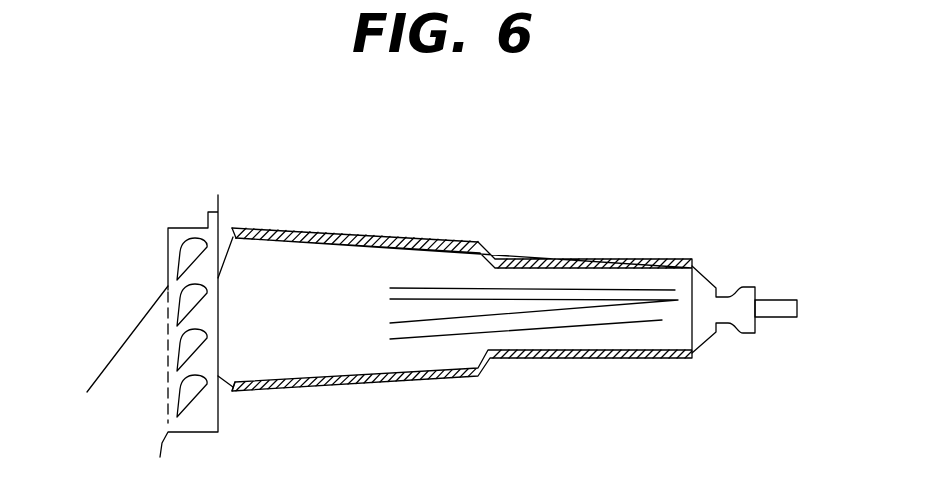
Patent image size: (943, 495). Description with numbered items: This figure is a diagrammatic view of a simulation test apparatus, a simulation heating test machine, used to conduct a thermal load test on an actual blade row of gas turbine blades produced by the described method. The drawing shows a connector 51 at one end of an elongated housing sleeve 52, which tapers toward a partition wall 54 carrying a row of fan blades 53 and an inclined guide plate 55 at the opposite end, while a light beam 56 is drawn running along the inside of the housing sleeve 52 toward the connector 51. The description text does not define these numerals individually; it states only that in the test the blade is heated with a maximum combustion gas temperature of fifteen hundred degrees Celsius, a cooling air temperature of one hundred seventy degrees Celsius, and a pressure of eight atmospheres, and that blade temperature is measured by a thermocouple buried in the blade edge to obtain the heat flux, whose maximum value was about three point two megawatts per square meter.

The connector 51 is at (741, 288).
The housing sleeve 52 is at (407, 240).
The fan blades 53 is at (220, 337).
The partition wall 54 is at (219, 278).
The inclined guide plate 55 is at (138, 324).
The light beam 56 is at (590, 328).